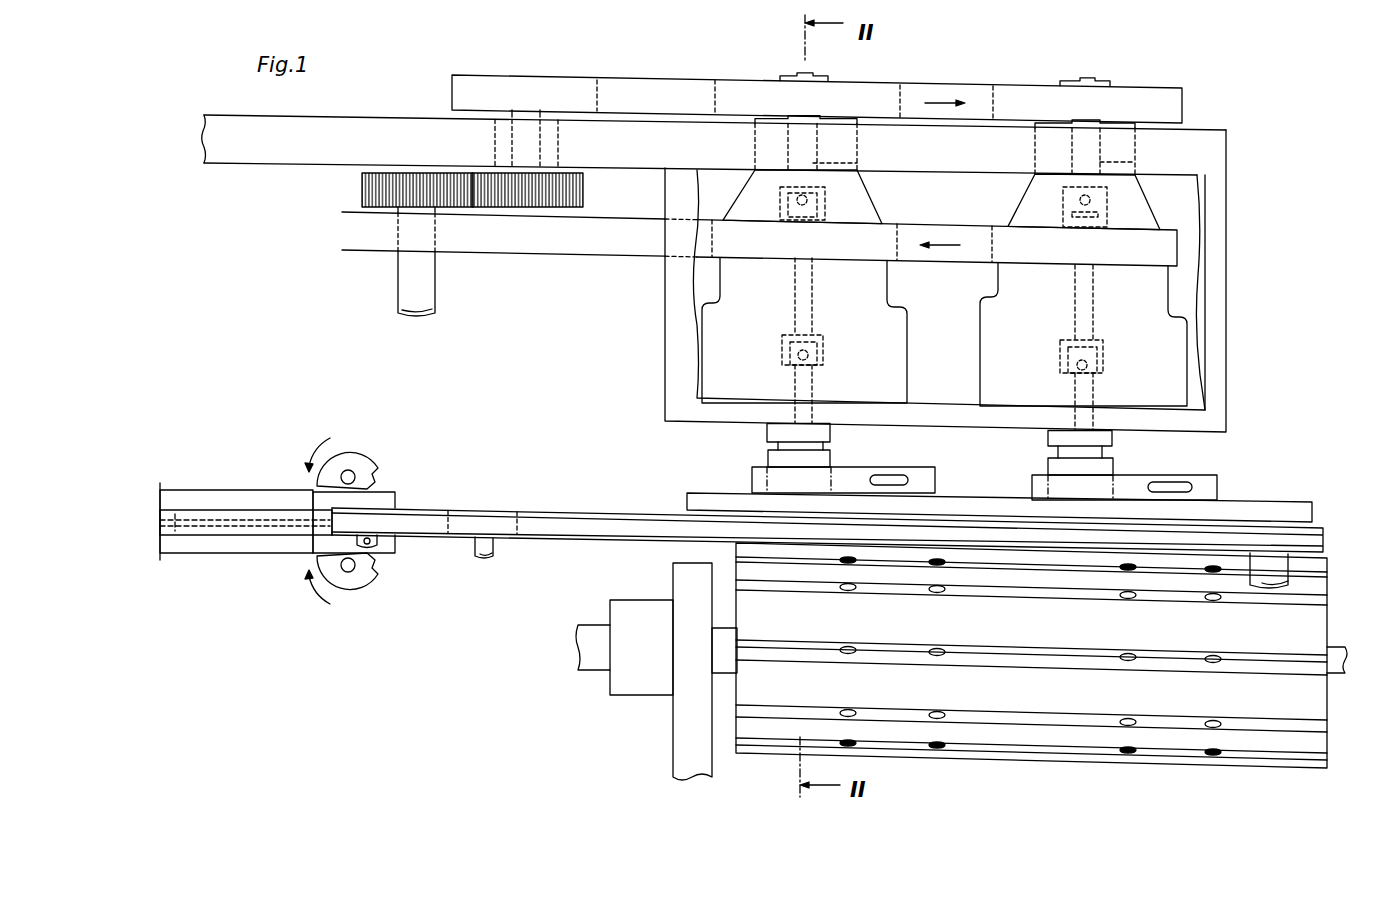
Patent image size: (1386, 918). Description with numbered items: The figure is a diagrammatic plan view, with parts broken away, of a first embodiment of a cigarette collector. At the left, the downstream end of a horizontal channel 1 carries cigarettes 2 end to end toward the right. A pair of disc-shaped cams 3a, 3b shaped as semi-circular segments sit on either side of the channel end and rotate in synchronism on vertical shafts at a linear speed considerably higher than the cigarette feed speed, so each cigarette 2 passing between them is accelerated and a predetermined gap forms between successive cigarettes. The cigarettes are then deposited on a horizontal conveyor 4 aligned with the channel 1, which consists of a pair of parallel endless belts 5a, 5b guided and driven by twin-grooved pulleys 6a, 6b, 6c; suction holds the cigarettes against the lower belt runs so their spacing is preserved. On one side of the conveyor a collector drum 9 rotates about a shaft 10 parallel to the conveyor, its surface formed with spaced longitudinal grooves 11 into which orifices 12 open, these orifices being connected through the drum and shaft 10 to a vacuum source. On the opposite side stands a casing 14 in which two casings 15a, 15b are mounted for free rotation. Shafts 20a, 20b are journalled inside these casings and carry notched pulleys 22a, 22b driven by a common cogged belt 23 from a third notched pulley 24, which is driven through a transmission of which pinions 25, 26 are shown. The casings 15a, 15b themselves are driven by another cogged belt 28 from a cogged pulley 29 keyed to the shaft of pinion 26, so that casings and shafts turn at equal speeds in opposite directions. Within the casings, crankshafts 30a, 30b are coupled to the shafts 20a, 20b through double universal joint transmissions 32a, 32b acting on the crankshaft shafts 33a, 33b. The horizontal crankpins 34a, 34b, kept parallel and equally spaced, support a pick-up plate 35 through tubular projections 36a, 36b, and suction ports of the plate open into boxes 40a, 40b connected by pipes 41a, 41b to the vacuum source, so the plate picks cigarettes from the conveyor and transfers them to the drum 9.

The horizontal channel 1 is at (253, 543).
The cigarettes 2 is at (227, 520).
The disc-shaped cam 3a is at (355, 460).
The disc-shaped cam 3b is at (355, 587).
The horizontal conveyor 4 is at (600, 518).
The endless belt 5a is at (435, 513).
The endless belt 5b is at (435, 533).
The twin-grooved pulley 6a is at (368, 520).
The twin-grooved pulley 6b is at (487, 525).
The twin-grooved pulley 6c is at (1300, 542).
The collector drum 9 is at (1331, 719).
The shaft 10 is at (592, 658).
The longitudinal grooves 11 is at (1077, 608).
The orifices 12 is at (932, 648).
The casing 14 is at (1217, 285).
The rotary casing 15a is at (907, 335).
The rotary casing 15b is at (1187, 368).
The shaft 20a is at (857, 163).
The shaft 20b is at (1100, 162).
The notched pulley 22a is at (903, 98).
The notched pulley 22b is at (993, 100).
The cogged belt 23 is at (673, 97).
The notched pulley 24 is at (600, 100).
The pinion 25 is at (565, 193).
The pinion 26 is at (378, 188).
The cogged belt 28 is at (623, 240).
The cogged pulley 29 is at (488, 220).
The crankshaft 30a is at (838, 437).
The crankshaft 30b is at (1120, 443).
The double universal joint transmission 32a is at (810, 320).
The double universal joint transmission 32b is at (1090, 327).
The crankshaft shaft 33a is at (813, 385).
The crankshaft shaft 33b is at (1097, 388).
The crankpin 34a is at (778, 445).
The crankpin 34b is at (1058, 452).
The pick-up plate 35 is at (1318, 506).
The tubular projection 36a is at (832, 460).
The tubular projection 36b is at (1113, 470).
The box 40a is at (753, 473).
The box 40b is at (1035, 482).
The pipe 41a is at (903, 477).
The pipe 41b is at (1183, 482).